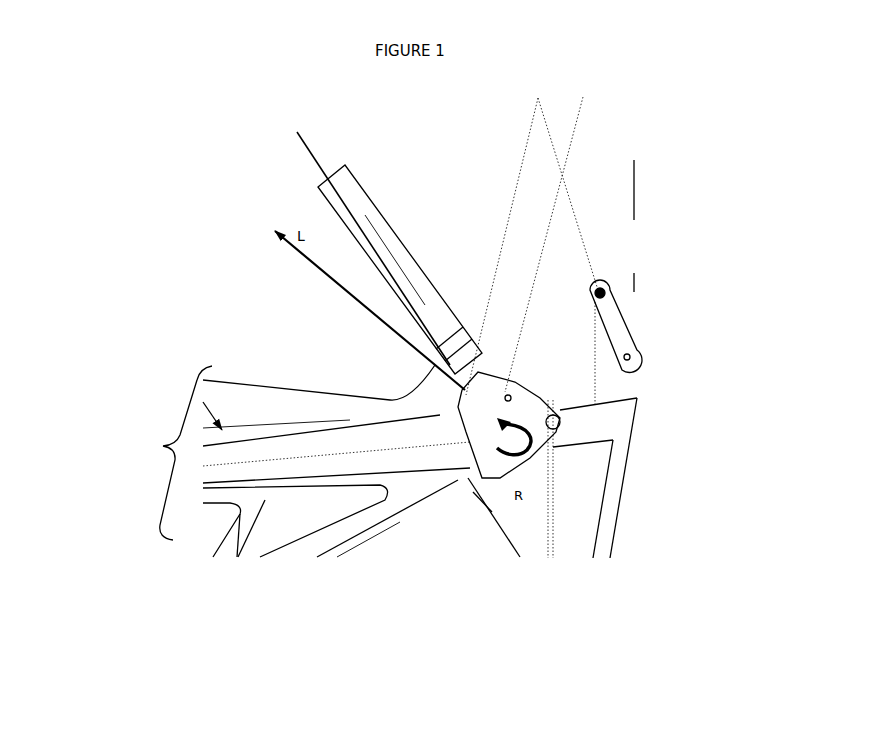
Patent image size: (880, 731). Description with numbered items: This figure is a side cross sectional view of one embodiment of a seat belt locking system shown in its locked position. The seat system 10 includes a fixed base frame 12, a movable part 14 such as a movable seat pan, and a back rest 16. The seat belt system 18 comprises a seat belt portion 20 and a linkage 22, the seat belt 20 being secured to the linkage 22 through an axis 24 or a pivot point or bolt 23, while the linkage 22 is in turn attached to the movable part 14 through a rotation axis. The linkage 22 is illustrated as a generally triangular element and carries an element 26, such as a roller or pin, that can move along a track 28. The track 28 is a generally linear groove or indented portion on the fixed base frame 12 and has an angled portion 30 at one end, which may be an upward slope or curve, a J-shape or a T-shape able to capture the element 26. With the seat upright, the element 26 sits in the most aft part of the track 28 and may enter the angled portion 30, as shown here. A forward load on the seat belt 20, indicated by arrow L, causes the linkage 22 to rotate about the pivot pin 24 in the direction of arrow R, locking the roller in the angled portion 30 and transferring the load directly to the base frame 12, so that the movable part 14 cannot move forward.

The seat system 10 is at (214, 174).
The fixed base frame 12 is at (152, 442).
The movable part 14 is at (286, 346).
The back rest 16 is at (593, 112).
The seat belt system 18 is at (668, 360).
The seat belt portion 20 is at (369, 173).
The linkage 22 is at (506, 392).
The bolt 23 is at (467, 414).
The axis 24 is at (494, 378).
The element 26 is at (575, 421).
The track 28 is at (456, 470).
The angled portion 30 is at (556, 444).